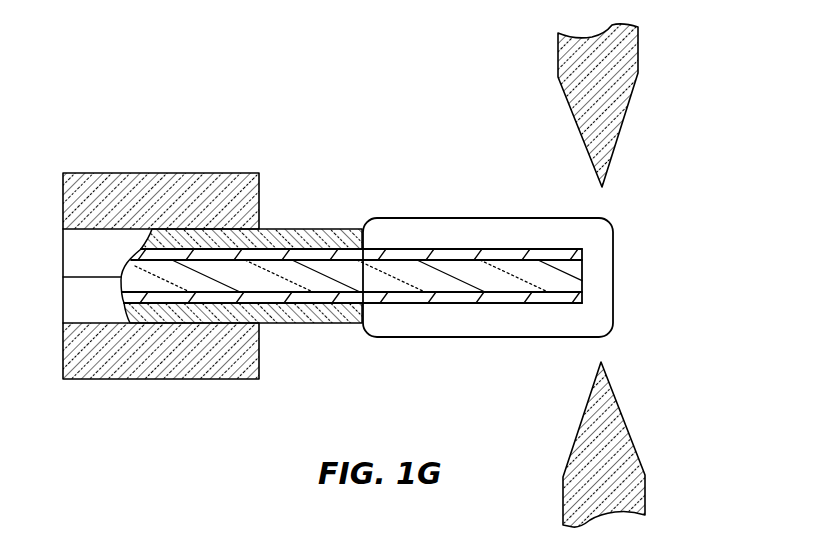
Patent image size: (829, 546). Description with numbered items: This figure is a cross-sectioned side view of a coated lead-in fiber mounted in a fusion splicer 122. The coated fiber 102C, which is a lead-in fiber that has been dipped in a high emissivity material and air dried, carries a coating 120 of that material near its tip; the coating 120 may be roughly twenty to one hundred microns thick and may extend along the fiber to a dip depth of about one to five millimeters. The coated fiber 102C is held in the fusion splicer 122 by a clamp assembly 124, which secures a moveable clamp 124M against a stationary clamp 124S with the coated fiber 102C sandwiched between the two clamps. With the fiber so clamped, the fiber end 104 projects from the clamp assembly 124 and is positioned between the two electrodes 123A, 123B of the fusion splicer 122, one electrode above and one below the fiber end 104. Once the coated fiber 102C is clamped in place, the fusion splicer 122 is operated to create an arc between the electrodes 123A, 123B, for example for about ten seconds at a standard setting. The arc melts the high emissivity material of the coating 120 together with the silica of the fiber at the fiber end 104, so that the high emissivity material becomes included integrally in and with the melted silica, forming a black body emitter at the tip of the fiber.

The fusion splicer 122 is at (262, 76).
The clamp assembly 124 is at (127, 152).
The moveable clamp 124M is at (183, 172).
The stationary clamp 124S is at (133, 382).
The coated fiber 102C is at (326, 218).
The coating 120 is at (473, 218).
The fiber end 104 is at (630, 275).
The electrode 123A is at (625, 120).
The electrode 123B is at (623, 422).